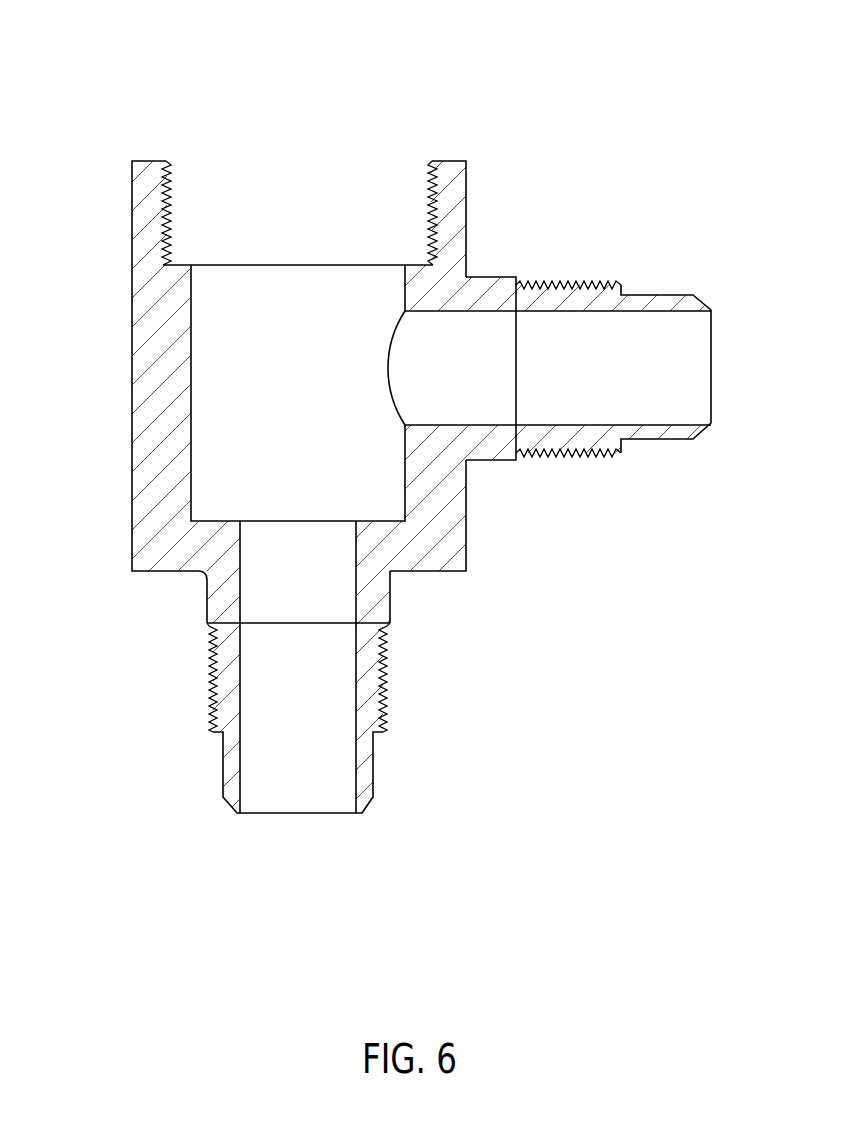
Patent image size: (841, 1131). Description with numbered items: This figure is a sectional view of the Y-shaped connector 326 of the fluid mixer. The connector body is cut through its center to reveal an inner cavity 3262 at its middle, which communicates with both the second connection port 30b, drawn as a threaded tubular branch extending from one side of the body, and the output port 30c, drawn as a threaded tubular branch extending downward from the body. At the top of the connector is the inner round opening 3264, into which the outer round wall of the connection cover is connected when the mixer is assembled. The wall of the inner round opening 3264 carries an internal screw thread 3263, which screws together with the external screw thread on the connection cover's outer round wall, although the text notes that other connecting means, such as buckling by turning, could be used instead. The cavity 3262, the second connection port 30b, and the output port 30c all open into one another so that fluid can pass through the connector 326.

The Y-shaped connector 326 is at (148, 77).
The cavity 3262 is at (206, 340).
The internal screw thread 3263 is at (172, 222).
The inner round opening 3264 is at (353, 177).
The second connection port 30b is at (680, 298).
The output port 30c is at (366, 688).